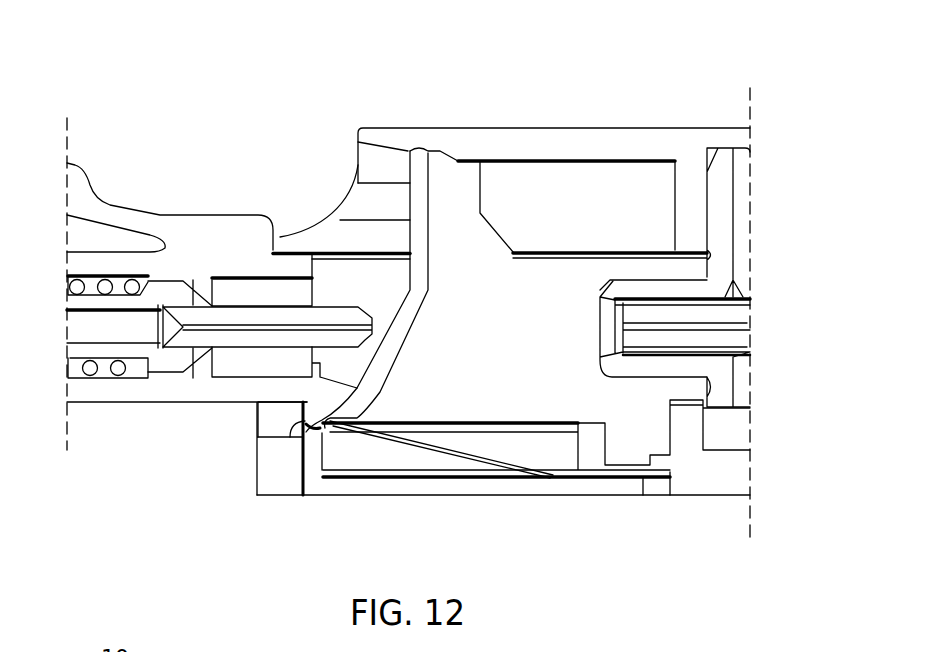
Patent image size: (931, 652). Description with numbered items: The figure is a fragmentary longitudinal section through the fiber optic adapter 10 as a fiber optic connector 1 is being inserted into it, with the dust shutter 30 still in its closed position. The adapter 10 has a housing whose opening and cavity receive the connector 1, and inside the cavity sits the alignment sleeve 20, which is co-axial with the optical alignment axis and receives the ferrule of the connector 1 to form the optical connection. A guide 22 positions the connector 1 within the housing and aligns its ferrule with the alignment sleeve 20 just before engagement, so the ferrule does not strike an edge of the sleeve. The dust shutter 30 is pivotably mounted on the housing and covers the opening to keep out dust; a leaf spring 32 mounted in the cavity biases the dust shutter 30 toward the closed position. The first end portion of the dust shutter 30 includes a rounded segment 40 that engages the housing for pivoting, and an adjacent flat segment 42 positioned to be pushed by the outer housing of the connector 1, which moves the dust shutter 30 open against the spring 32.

The fiber optic adapter 10 is at (557, 102).
The fiber optic connector 1 is at (223, 205).
The guide 22 is at (537, 177).
The alignment sleeve 20 is at (648, 293).
The dust shutter 30 is at (408, 177).
The spring 32 is at (416, 440).
The rounded segment 40 is at (305, 436).
The flat segment 42 is at (305, 404).